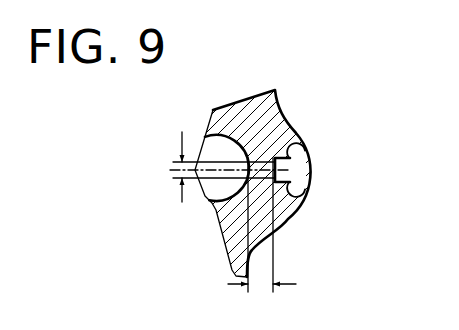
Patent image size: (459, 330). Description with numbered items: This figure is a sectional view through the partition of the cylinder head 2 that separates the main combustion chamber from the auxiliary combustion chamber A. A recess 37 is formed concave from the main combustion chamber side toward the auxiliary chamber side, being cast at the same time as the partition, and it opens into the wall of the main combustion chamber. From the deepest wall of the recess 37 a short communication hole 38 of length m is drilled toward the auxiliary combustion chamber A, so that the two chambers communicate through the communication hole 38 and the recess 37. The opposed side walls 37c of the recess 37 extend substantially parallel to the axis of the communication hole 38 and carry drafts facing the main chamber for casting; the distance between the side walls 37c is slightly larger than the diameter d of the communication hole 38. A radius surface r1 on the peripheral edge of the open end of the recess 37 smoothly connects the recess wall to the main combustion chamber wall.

The cylinder head 2 is at (238, 117).
The recess 37 is at (304, 166).
The side walls 37c is at (305, 157).
The communication hole 38 is at (247, 180).
The auxiliary combustion chamber A is at (206, 198).
The diameter d is at (176, 169).
The length m is at (262, 225).
The radius surface r1 is at (292, 142).